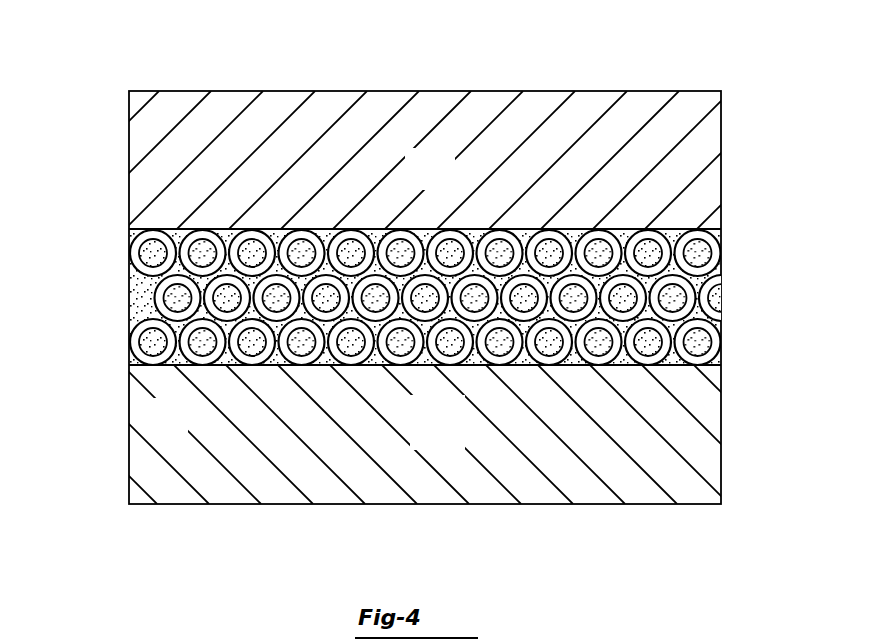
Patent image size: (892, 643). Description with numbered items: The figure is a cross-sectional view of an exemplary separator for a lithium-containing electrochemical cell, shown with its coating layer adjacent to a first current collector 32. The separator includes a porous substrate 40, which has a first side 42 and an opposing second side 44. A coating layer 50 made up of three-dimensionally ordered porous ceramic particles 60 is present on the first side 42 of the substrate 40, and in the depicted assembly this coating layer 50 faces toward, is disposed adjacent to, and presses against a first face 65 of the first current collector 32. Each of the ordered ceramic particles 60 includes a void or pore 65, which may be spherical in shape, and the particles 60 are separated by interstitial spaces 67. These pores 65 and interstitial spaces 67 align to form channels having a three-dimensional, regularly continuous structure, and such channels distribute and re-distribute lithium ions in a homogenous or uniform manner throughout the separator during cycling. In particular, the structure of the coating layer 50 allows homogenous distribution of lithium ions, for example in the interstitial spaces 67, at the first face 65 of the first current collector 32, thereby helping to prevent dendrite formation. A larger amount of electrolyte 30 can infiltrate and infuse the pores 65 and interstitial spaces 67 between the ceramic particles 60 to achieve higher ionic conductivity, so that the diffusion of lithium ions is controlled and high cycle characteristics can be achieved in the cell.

The electrolyte 30 is at (143, 297).
The first current collector 32 is at (454, 441).
The porous substrate 40 is at (447, 184).
The first side 42 is at (580, 240).
The second side 44 is at (375, 90).
The coating layer 50 is at (95, 228).
The three-dimensionally ordered porous ceramic particles 60 is at (723, 280).
The void or pore 65 is at (703, 257).
The interstitial spaces 67 is at (675, 330).